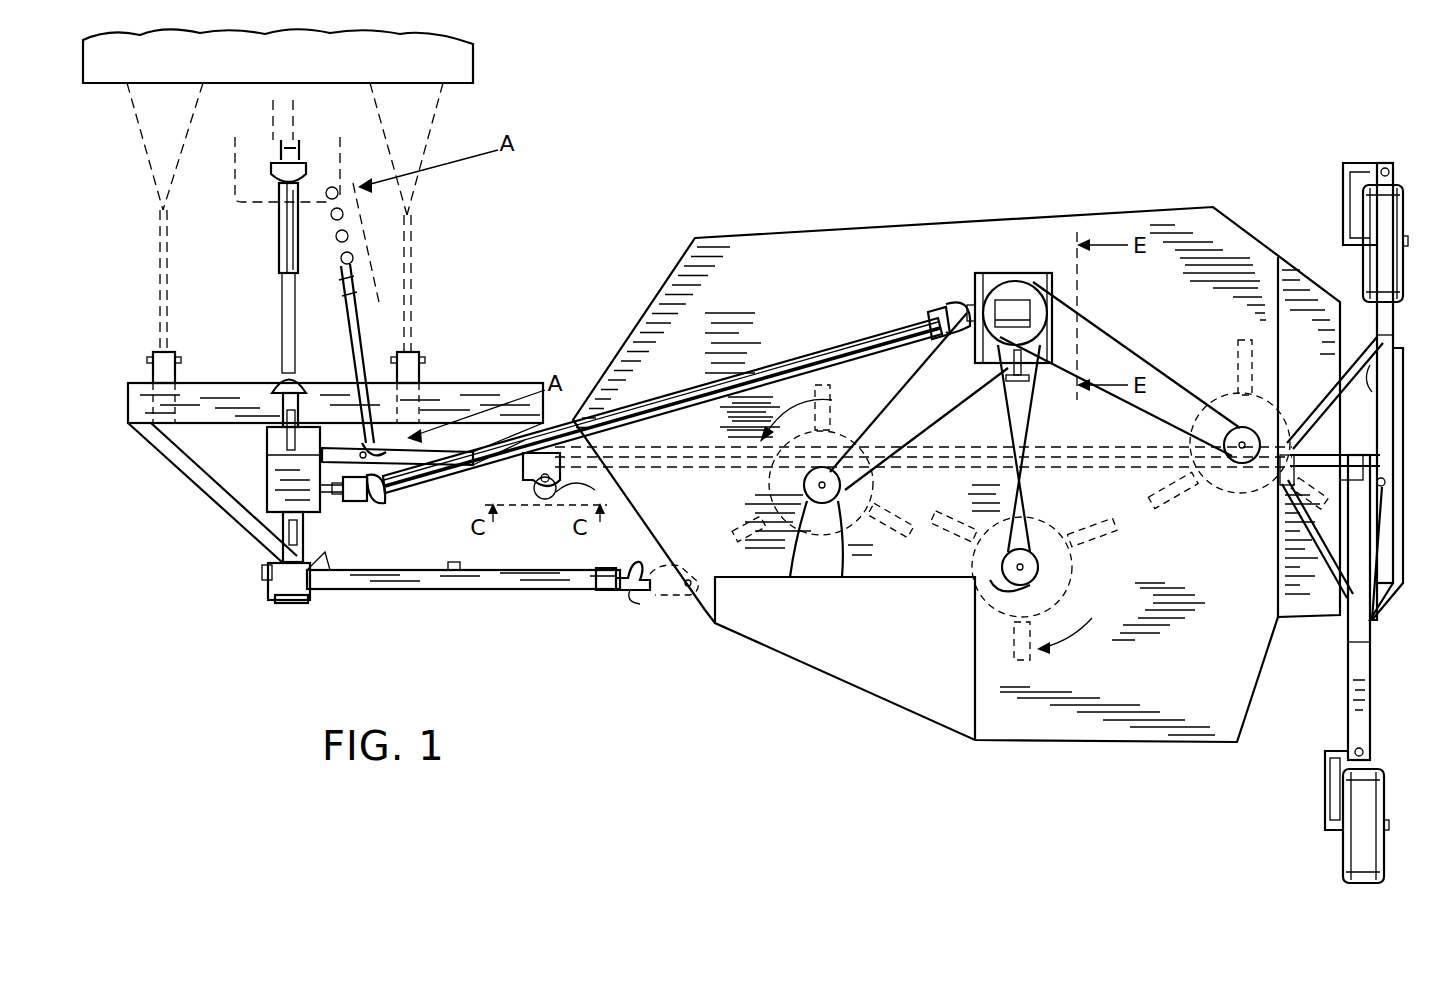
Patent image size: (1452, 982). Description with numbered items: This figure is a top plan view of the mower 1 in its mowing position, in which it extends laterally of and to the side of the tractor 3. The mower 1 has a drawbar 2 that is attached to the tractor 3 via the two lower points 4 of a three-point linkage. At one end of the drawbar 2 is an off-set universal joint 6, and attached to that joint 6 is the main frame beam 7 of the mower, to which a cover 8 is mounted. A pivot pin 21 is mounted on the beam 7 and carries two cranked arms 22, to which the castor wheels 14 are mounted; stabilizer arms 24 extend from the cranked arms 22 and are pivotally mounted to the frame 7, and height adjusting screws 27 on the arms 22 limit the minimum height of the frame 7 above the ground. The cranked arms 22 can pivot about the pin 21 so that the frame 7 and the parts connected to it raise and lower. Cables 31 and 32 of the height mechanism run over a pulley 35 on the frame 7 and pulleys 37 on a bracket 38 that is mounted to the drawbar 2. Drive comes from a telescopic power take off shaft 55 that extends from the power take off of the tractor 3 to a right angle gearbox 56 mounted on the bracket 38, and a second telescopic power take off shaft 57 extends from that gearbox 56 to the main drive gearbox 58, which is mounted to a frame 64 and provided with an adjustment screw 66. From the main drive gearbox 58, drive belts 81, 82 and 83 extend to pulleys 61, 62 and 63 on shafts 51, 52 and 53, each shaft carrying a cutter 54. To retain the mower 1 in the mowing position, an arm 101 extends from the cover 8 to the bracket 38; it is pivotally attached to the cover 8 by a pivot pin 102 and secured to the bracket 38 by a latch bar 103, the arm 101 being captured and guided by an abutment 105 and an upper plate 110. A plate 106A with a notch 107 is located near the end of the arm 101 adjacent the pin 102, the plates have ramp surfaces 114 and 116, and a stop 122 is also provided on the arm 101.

The mower 1 is at (956, 474).
The drawbar 2 is at (488, 396).
The tractor 3 is at (343, 69).
The lower points 4 is at (170, 345).
The off-set universal joint 6 is at (530, 470).
The main frame beam 7 is at (676, 411).
The cover 8 is at (811, 280).
The castor wheels 14 is at (1395, 200).
The pivot pin 21 is at (1345, 456).
The cranked arms 22 is at (1370, 698).
The stabilizer arms 24 is at (1253, 364).
The height adjusting screws 27 is at (1373, 378).
The cable 31 is at (445, 448).
The cable 32 is at (415, 480).
The pulley 35 is at (571, 494).
The pulleys 37 is at (355, 395).
The bracket 38 is at (195, 472).
The shaft 51 is at (845, 578).
The shaft 52 is at (1060, 585).
The shaft 53 is at (1232, 463).
The cutter 54 is at (875, 480).
The telescopic power take off shaft 55 is at (276, 236).
The right angle gearbox 56 is at (277, 483).
The telescopic power take off shaft 57 is at (740, 380).
The main drive gearbox 58 is at (983, 367).
The pulley 61 is at (808, 580).
The pulley 62 is at (965, 625).
The pulley 63 is at (1225, 420).
The frame 64 is at (1050, 300).
The adjustment screw 66 is at (1005, 400).
The drive belt 81 is at (842, 430).
The drive belt 82 is at (1028, 440).
The drive belt 83 is at (1150, 418).
The arm 101 is at (512, 589).
The pivot pin 102 is at (692, 596).
The latch bar 103 is at (265, 568).
The abutment 105 is at (300, 603).
The plate 106A is at (664, 566).
The notch 107 is at (646, 620).
The upper plate 110 is at (290, 585).
The ramp surface 114 is at (322, 568).
The ramp surface 116 is at (604, 590).
The stop 122 is at (455, 563).